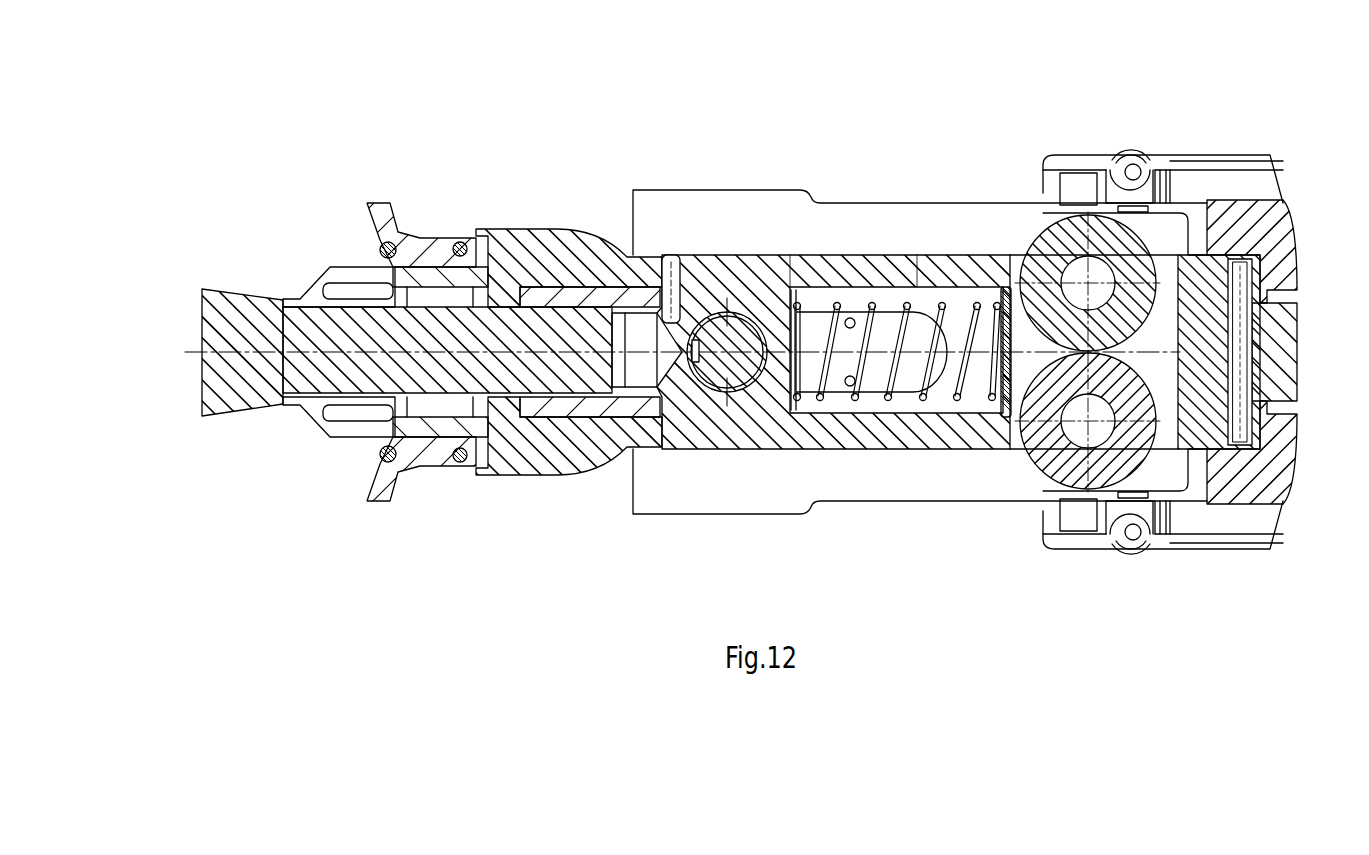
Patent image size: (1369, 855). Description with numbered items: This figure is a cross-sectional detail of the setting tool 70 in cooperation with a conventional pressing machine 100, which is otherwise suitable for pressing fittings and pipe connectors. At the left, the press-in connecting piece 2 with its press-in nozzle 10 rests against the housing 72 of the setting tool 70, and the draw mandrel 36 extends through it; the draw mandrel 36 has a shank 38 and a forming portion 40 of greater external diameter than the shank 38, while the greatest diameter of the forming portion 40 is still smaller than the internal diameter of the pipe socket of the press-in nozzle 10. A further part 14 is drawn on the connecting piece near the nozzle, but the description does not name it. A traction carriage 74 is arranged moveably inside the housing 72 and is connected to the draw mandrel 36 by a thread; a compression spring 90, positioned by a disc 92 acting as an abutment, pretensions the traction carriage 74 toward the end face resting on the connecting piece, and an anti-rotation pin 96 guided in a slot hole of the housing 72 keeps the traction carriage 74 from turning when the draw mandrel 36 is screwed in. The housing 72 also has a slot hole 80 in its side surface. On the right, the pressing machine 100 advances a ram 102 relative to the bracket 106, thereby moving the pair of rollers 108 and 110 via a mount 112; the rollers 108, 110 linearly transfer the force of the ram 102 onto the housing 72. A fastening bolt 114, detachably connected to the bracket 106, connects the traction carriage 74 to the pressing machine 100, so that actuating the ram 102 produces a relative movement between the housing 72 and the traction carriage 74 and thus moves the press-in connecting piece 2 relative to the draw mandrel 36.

The press-in connecting piece 2 is at (434, 491).
The press-in nozzle 10 is at (338, 250).
The clamping collet 14 is at (296, 274).
The draw mandrel 36 is at (183, 410).
The shank 38 is at (350, 372).
The forming portion 40 is at (237, 392).
The setting tool 70 is at (537, 212).
The housing 72 is at (547, 453).
The traction carriage 74 is at (680, 397).
The slot hole 80 is at (913, 370).
The compression spring 90 is at (952, 377).
The disc 92 is at (988, 408).
The pin 96 is at (667, 267).
The pressing machine 100 is at (1160, 130).
The ram 102 is at (1297, 380).
The bracket 106 is at (710, 208).
The roller 108 is at (1043, 460).
The roller 110 is at (1043, 243).
The mount 112 is at (1207, 420).
The fastening bolt 114 is at (737, 373).